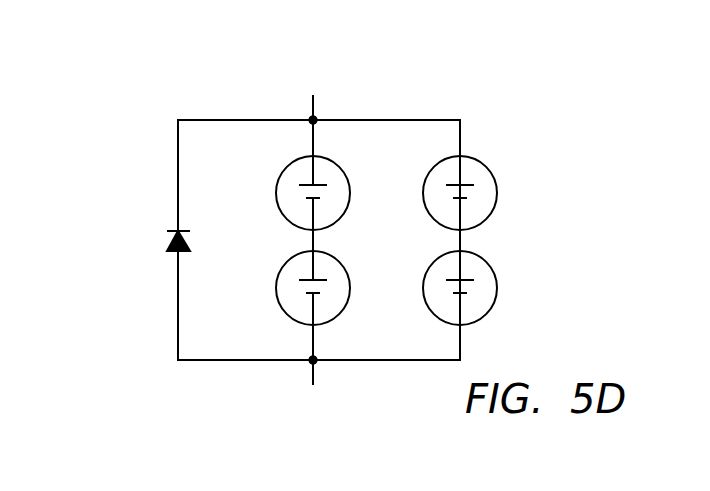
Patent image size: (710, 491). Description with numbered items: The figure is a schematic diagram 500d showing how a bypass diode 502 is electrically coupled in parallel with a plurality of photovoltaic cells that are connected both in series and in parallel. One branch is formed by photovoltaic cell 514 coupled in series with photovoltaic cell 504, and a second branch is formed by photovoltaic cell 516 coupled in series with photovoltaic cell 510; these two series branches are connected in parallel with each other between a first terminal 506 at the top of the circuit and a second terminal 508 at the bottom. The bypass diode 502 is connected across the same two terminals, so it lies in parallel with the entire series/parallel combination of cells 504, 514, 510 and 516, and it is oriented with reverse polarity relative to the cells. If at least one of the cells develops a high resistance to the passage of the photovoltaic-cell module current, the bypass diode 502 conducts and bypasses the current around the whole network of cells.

The schematic diagram 500d is at (502, 82).
The bypass diode 502 is at (176, 230).
The photovoltaic cell 504 is at (350, 287).
The first terminal 506 is at (316, 118).
The second terminal 508 is at (316, 362).
The photovoltaic cell 510 is at (497, 287).
The photovoltaic cell 514 is at (350, 192).
The photovoltaic cell 516 is at (497, 192).